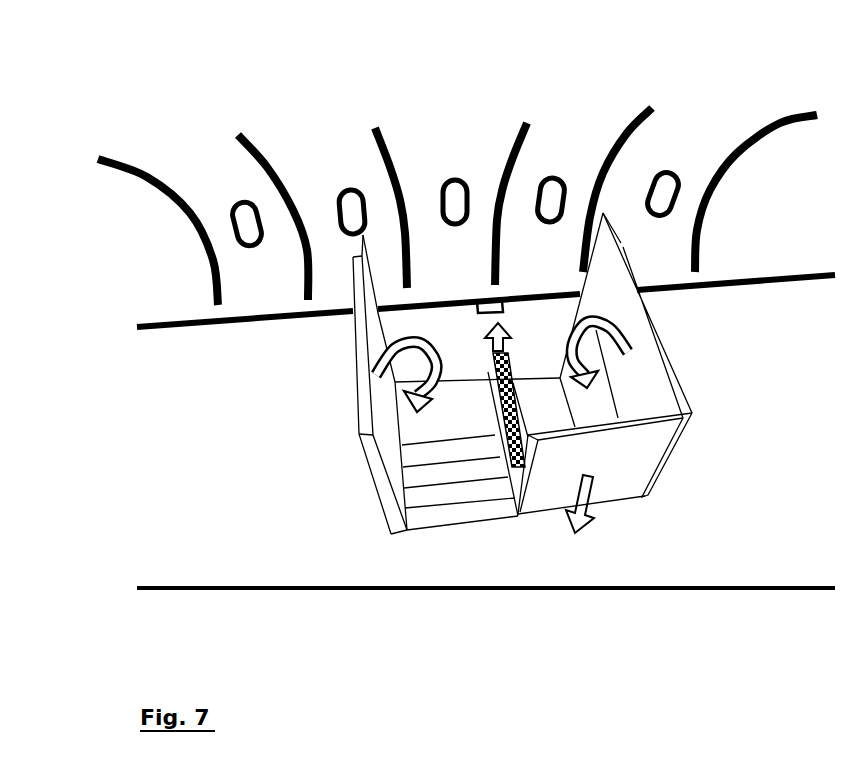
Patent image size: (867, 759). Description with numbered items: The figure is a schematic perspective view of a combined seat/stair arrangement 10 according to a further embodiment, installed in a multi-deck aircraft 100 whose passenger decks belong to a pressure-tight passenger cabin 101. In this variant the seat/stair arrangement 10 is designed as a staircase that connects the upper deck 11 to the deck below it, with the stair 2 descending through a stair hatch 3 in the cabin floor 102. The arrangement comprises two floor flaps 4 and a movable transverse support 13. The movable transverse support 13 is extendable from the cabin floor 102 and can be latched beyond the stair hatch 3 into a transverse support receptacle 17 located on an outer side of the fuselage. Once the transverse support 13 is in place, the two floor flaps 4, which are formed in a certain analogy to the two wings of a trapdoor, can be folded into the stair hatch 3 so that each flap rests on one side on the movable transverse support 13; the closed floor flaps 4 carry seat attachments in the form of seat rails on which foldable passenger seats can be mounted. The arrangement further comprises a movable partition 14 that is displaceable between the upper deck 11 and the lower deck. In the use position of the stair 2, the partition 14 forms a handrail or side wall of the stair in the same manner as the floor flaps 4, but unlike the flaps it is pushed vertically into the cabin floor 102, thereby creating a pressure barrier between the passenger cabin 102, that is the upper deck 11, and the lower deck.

The aircraft 100 is at (98, 58).
The passenger cabin 101 is at (138, 551).
The cabin floor 102 is at (829, 402).
The combined seat/stair arrangement 10 is at (265, 460).
The upper deck 11 is at (726, 558).
The stair 2 is at (464, 429).
The stair hatch 3 is at (462, 529).
The floor flaps 4 is at (355, 363).
The movable transverse support 13 is at (497, 358).
The movable partition 14 is at (618, 493).
The transverse support receptacle 17 is at (503, 310).